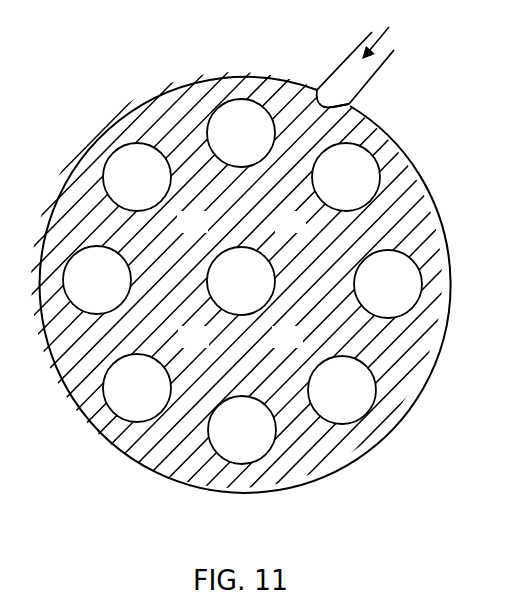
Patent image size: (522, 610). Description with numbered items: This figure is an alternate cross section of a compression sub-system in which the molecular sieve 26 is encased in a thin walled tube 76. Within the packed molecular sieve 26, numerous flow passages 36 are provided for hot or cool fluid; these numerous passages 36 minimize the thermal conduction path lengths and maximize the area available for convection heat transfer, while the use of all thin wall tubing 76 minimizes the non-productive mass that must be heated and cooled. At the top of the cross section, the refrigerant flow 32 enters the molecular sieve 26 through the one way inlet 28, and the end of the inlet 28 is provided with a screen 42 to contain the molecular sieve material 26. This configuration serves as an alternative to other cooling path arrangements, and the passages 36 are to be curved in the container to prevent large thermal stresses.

The molecular sieve 26 is at (261, 305).
The flow passages 36 is at (242, 281).
The thin walled tube 76 is at (90, 136).
The inlet 28 is at (354, 92).
The refrigerant flow 32 is at (389, 34).
The screens 42 is at (350, 107).